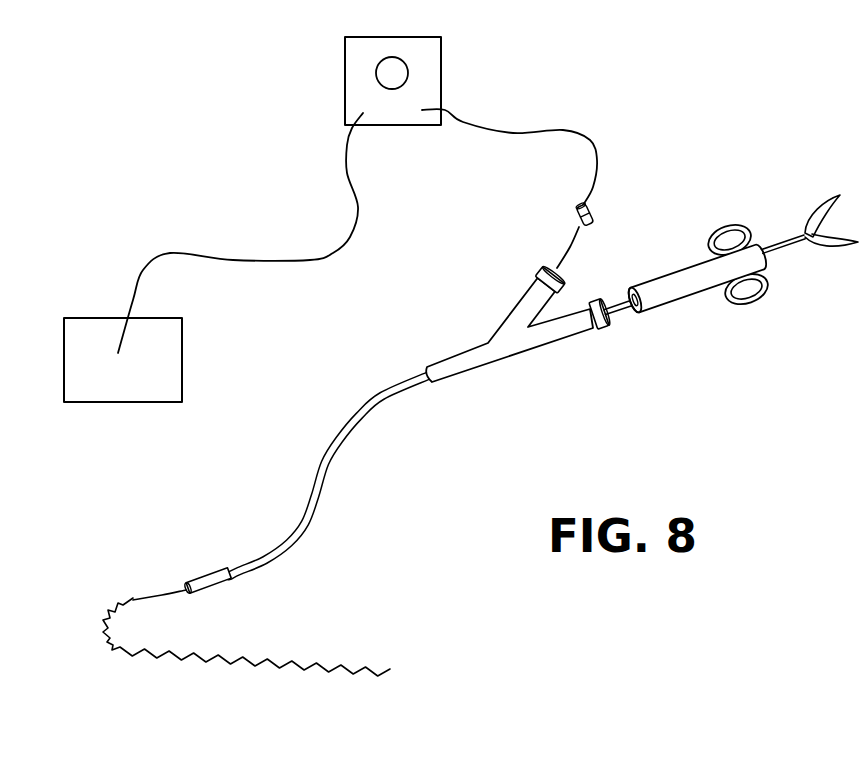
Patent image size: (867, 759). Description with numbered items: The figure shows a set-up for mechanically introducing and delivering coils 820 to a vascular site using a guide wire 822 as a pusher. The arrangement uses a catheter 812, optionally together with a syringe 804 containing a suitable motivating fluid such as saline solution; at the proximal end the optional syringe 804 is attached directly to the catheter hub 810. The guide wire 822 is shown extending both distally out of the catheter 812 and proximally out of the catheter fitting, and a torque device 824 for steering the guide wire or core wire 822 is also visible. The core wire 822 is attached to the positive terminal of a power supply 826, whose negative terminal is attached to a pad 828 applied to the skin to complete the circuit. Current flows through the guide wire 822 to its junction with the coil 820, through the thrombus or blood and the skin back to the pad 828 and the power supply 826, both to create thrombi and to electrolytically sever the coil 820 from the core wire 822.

The syringe 804 is at (683, 268).
The catheter hub 810 is at (607, 325).
The catheter 812 is at (424, 330).
The coil 820 is at (328, 658).
The guide wire 822 is at (566, 241).
The torque device 824 is at (578, 212).
The power supply 826 is at (432, 50).
The pad 828 is at (80, 332).